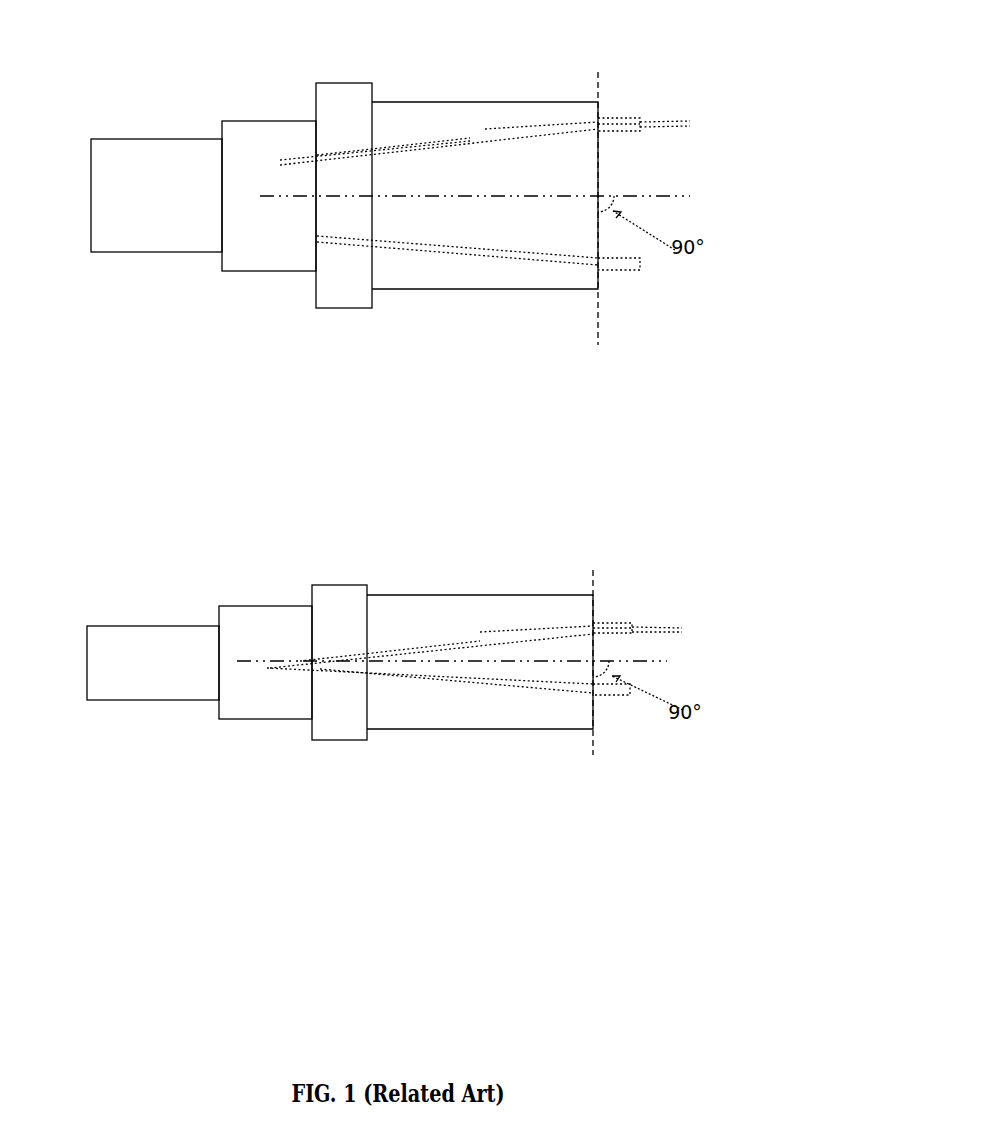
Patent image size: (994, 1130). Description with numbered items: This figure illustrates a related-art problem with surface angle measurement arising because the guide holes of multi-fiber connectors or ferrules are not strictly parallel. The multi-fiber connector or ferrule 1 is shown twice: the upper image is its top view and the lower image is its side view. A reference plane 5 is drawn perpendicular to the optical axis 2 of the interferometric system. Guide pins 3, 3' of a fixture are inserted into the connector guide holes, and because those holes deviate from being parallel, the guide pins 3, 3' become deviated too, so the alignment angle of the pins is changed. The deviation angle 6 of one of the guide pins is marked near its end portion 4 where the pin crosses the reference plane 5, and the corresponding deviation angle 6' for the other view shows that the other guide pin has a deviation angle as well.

The multi-fiber connector or ferrule 1 is at (155, 625).
The optical axis 2 is at (237, 661).
The guide pin 3 is at (434, 338).
The guide pin 3' is at (453, 510).
The rod end portion 4 is at (658, 120).
The reference plane 5 is at (597, 320).
The deviation angle 6 is at (717, 134).
The rod tip (alternate) 6' is at (709, 605).